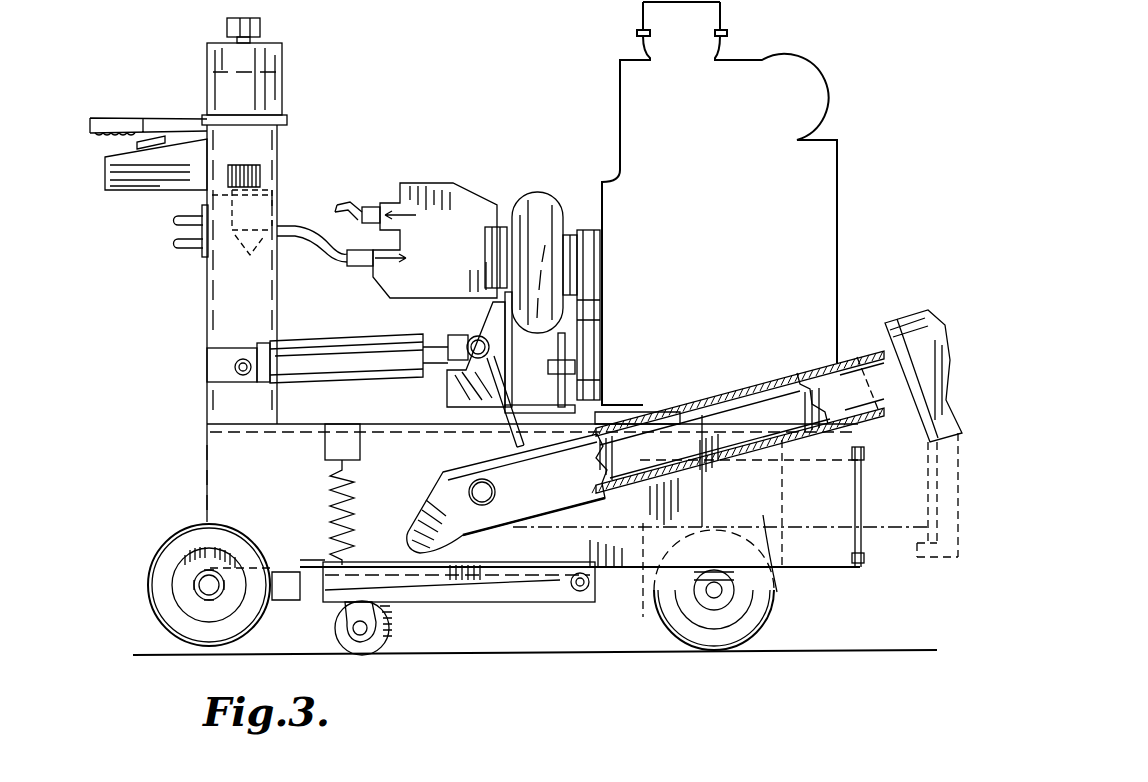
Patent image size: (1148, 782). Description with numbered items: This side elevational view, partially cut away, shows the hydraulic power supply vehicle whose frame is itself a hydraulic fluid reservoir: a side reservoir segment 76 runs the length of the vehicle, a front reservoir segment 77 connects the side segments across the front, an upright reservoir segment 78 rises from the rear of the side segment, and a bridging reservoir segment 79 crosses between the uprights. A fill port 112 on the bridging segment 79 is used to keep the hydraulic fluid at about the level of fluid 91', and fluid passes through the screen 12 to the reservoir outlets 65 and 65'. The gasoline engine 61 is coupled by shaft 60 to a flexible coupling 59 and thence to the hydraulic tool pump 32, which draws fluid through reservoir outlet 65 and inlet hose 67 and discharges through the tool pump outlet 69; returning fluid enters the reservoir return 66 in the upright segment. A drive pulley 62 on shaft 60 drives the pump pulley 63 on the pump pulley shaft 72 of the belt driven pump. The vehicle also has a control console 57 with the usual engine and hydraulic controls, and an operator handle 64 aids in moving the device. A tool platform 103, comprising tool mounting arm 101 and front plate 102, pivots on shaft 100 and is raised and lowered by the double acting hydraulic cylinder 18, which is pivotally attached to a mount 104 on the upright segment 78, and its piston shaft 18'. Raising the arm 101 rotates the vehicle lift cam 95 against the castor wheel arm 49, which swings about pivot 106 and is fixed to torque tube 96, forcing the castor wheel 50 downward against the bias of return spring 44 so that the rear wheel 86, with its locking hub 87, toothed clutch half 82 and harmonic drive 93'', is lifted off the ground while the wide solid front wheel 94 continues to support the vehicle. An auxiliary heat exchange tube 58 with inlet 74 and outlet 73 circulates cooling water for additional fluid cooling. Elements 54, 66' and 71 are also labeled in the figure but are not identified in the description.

The screen 12 is at (254, 172).
The hydraulic cylinder 18 is at (373, 341).
The piston shaft 18' is at (412, 396).
The hydraulic tool pump 32 is at (441, 183).
The castor wheel return spring 44 is at (330, 500).
The castor wheel arm 49 is at (485, 596).
The castor wheel 50 is at (385, 630).
The engine component 54 is at (450, 6).
The control console 57 is at (130, 177).
The auxiliary heat exchange tube 58 is at (638, 587).
The flexible coupling 59 is at (535, 200).
The shaft 60 is at (540, 352).
The gasoline engine 61 is at (640, 88).
The drive pulley 62 is at (585, 232).
The pump pulley 63 is at (602, 340).
The operator handle 64 is at (160, 118).
The reservoir outlet 65 is at (250, 247).
The reservoir outlet 65' is at (285, 174).
The reservoir return 66 is at (156, 243).
The hydraulic hose 66' is at (163, 274).
The inlet hose 67 is at (330, 250).
The tool pump outlet 69 is at (350, 204).
The gusset plate 71 is at (455, 410).
The pump pulley shaft 72 is at (580, 367).
The outlet 73 is at (864, 452).
The inlet 74 is at (864, 556).
The side reservoir segment 76 is at (778, 592).
The front reservoir segment 77 is at (838, 490).
The upright reservoir segment 78 is at (208, 338).
The bridging reservoir segment 79 is at (283, 95).
The toothed clutch half 82 is at (593, 6).
The rear wheel 86 is at (172, 545).
The locking hub 87 is at (196, 570).
The level of fluid 91' is at (281, 49).
The harmonic drive 93'' is at (533, 13).
The front wheel 94 is at (748, 632).
The vehicle lift cam 95 is at (430, 525).
The torque tube 96 is at (590, 585).
The shaft 100 is at (496, 492).
The tool mounting arm 101 is at (698, 392).
The front plate 102 is at (898, 320).
The tool platform 103 is at (796, 354).
The mount 104 is at (245, 376).
The pivot 106 is at (570, 598).
The fill port 112 is at (262, 29).